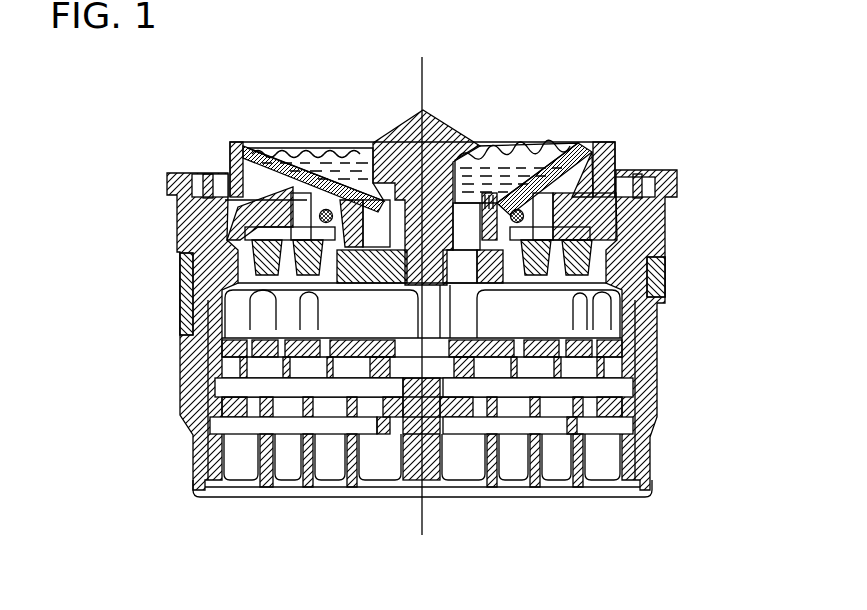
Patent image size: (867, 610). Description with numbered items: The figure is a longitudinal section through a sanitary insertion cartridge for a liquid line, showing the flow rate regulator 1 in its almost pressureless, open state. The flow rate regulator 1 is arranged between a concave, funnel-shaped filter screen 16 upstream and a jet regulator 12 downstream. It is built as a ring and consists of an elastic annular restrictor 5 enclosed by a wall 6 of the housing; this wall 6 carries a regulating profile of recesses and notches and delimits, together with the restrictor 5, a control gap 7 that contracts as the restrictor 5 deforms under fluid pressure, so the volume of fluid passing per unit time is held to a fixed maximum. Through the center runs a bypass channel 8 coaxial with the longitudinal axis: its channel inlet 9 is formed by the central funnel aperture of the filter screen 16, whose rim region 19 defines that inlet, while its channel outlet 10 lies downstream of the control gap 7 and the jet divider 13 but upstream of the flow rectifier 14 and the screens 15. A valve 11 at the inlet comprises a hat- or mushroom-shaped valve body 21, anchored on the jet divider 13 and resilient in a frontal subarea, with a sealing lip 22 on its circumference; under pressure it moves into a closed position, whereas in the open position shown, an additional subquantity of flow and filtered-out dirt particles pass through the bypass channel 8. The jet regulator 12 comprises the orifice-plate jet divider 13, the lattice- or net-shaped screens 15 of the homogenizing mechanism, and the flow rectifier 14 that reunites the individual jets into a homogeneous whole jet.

The flow rate regulator 1 is at (595, 178).
The annular restrictor 5 is at (535, 185).
The wall of the housing 6 is at (566, 175).
The control gap 7 is at (560, 236).
The bypass channel 8 is at (376, 190).
The channel inlet 9 is at (330, 170).
The channel outlet 10 is at (462, 285).
The valve 11 is at (408, 98).
The jet regulator 12 is at (162, 262).
The jet divider 13 is at (615, 252).
The flow rectifier 14 is at (615, 465).
The screens 15 is at (598, 408).
The filter screen 16 is at (243, 146).
The rim region 19 is at (213, 350).
The valve body 21 is at (440, 168).
The sealing lip 22 is at (495, 175).